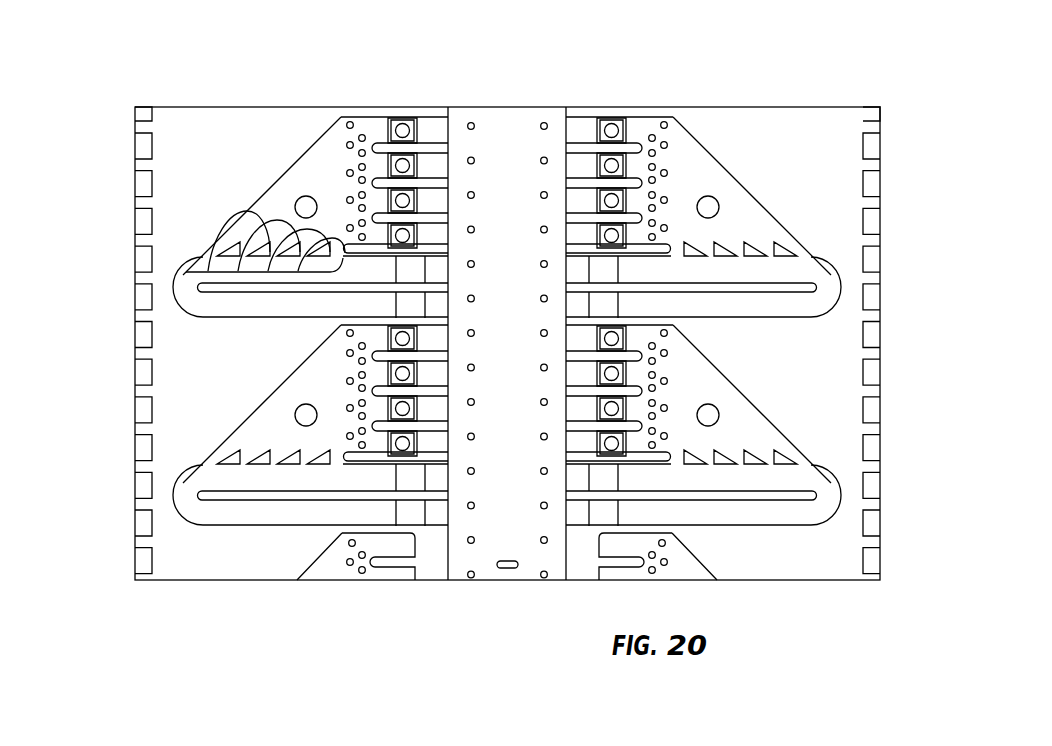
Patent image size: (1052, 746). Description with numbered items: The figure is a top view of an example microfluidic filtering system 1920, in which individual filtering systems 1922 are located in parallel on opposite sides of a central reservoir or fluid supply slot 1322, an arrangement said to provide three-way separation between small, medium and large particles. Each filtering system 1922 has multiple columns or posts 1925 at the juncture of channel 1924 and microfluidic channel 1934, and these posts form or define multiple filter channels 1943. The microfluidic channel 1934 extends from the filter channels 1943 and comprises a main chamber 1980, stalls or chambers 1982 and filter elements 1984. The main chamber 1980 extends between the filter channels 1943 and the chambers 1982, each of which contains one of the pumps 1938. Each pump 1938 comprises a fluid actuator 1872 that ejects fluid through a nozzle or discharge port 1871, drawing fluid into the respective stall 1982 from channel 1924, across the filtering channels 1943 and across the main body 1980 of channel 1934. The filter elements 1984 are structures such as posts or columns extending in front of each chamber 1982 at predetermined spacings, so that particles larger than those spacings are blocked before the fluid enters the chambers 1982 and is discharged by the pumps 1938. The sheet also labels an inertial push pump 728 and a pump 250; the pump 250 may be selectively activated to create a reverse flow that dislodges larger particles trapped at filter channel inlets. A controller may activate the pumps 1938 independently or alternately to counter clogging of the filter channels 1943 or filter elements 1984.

The microfluidic filtering system 1920 is at (92, 180).
The individual filtering system 1922 is at (498, 299).
The columns or posts 1925 is at (340, 216).
The channel 1924 is at (228, 318).
The filter channels 1943 is at (247, 212).
The microfluidic channel 1934 is at (272, 170).
The main chamber 1980 is at (316, 152).
The filter elements 1984 is at (362, 137).
The chambers 1982 is at (381, 118).
The pumps 1938 is at (412, 132).
The nozzle or discharge port 1871 is at (410, 163).
The fluid actuator 1872 is at (410, 177).
The inertial push pump 728 is at (422, 272).
The pump 250 is at (415, 308).
The reservoir or fluid supply slot 1322 is at (507, 582).